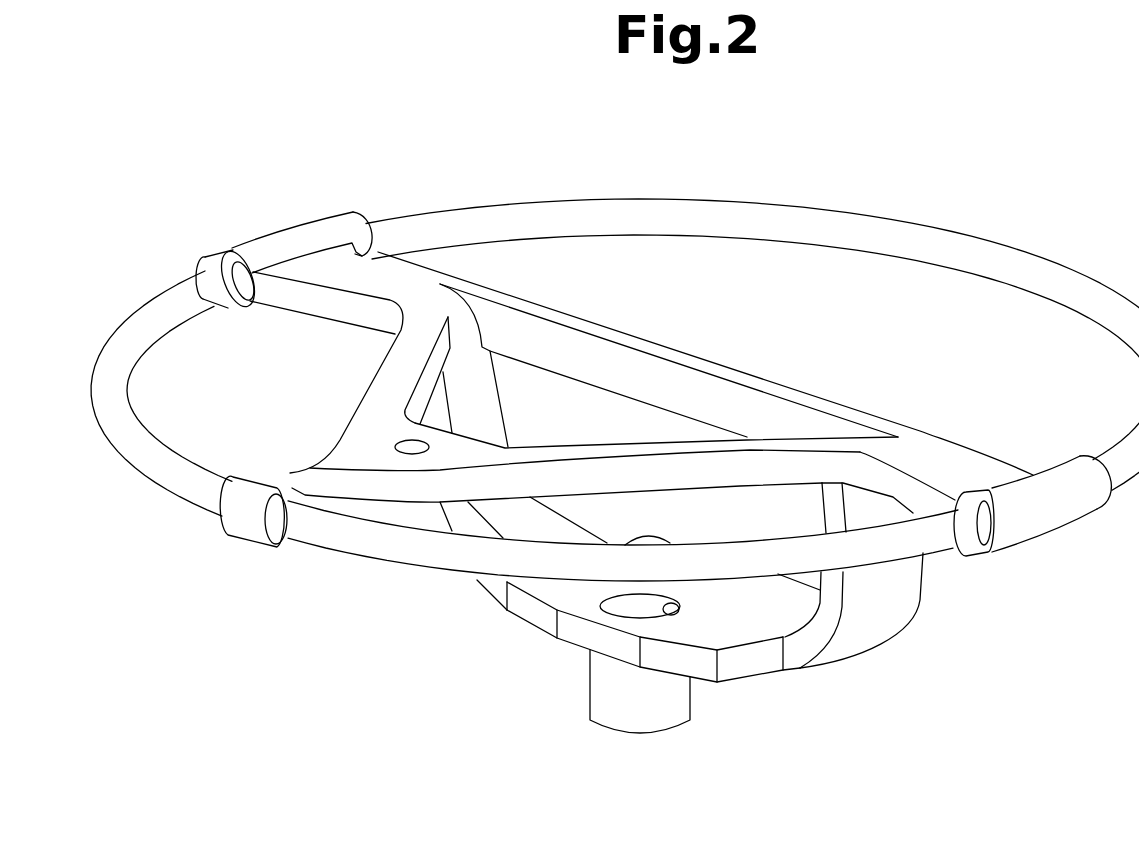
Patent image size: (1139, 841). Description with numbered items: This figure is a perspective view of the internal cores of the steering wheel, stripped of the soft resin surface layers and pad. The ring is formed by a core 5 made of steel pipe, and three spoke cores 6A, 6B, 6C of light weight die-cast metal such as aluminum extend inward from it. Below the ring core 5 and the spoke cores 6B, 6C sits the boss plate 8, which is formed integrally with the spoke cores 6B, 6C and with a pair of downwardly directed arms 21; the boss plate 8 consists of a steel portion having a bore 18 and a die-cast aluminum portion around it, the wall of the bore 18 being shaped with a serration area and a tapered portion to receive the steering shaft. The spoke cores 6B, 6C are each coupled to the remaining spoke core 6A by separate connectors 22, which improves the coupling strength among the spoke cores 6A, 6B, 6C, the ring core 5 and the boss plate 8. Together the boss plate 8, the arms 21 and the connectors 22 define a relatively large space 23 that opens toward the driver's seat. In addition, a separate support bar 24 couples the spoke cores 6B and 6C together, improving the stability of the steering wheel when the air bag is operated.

The core 5 is at (980, 247).
The spoke core 6A is at (297, 480).
The spoke core 6B is at (320, 318).
The spoke core 6C is at (960, 455).
The boss plate 8 is at (709, 670).
The bore 18 is at (680, 608).
The arms 21 is at (487, 377).
The connectors 22 is at (423, 388).
The space 23 is at (478, 602).
The support bar 24 is at (789, 390).